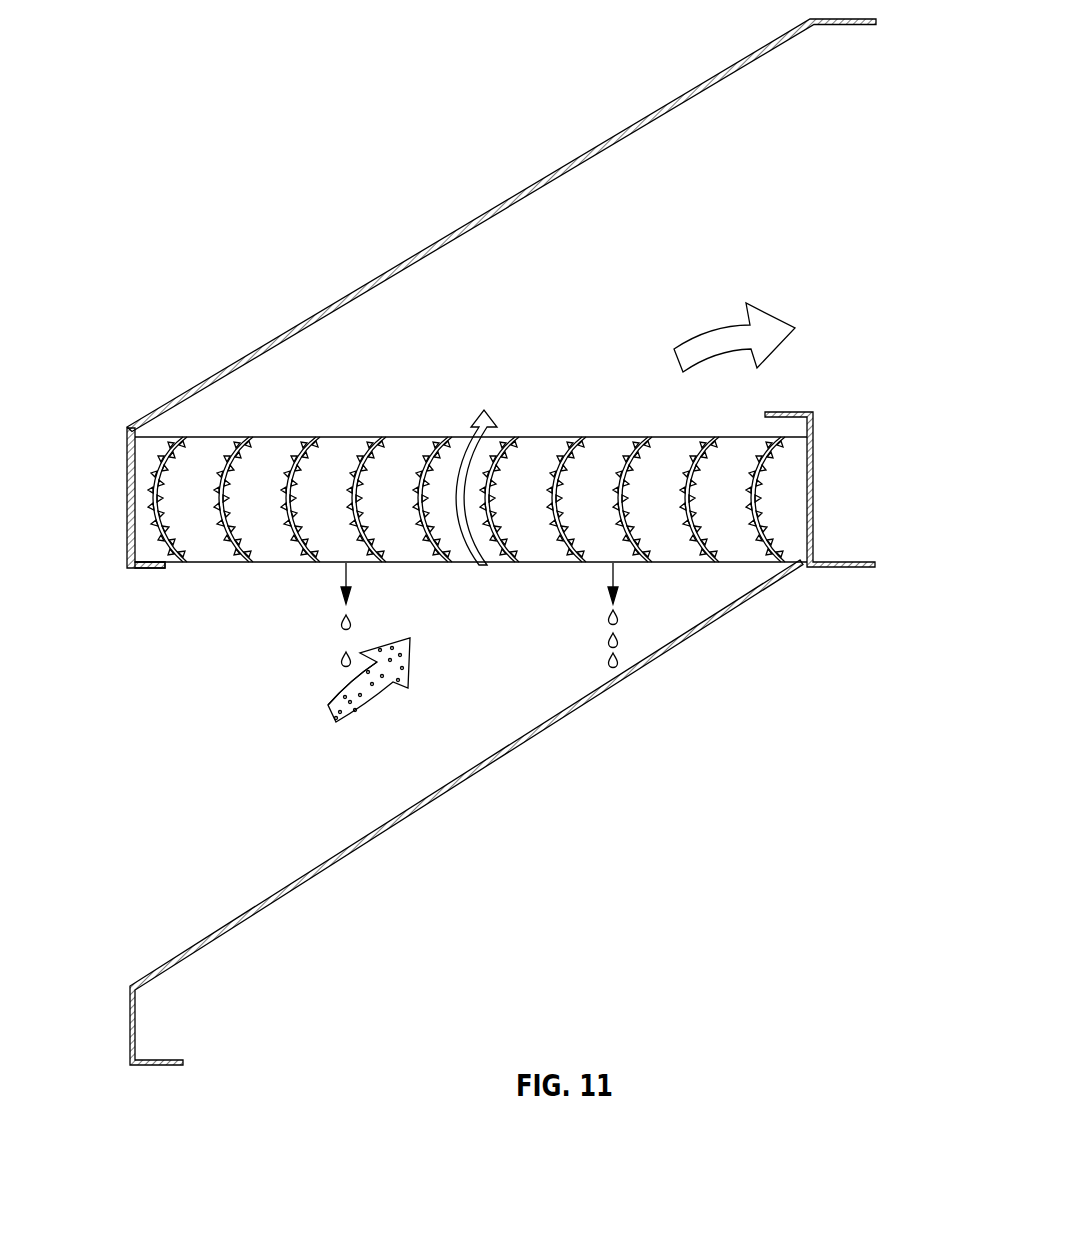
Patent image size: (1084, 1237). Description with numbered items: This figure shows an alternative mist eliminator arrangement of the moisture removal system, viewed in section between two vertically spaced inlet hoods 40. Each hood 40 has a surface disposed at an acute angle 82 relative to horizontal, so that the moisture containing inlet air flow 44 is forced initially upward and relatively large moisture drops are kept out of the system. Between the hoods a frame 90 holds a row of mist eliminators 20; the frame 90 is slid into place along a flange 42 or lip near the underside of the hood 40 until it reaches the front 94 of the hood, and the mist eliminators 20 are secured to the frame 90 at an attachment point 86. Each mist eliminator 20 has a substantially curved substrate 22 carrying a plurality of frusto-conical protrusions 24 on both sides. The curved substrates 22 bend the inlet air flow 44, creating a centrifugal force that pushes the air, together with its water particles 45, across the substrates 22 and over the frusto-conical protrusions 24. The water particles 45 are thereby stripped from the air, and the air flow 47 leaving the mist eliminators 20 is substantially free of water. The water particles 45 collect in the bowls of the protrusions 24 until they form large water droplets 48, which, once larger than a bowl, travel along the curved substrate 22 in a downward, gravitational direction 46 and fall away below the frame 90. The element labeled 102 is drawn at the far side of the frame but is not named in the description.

The mist eliminator 20 is at (252, 436).
The substantially curved substrate 22 is at (584, 443).
The frusto-conical protrusion 24 is at (652, 443).
The inlet hood 40 is at (406, 264).
The flange 42 is at (147, 569).
The inlet air flow 44 is at (412, 658).
The water particles 45 is at (367, 703).
The downward direction 46 is at (348, 576).
The air flow exiting the mist eliminators 47 is at (486, 420).
The large water droplet 48 is at (340, 659).
The acute angle 82 is at (632, 133).
The attachment point 86 is at (182, 444).
The frame 90 is at (732, 436).
The front of the hood 94 is at (126, 488).
The right side wall 102 is at (815, 522).